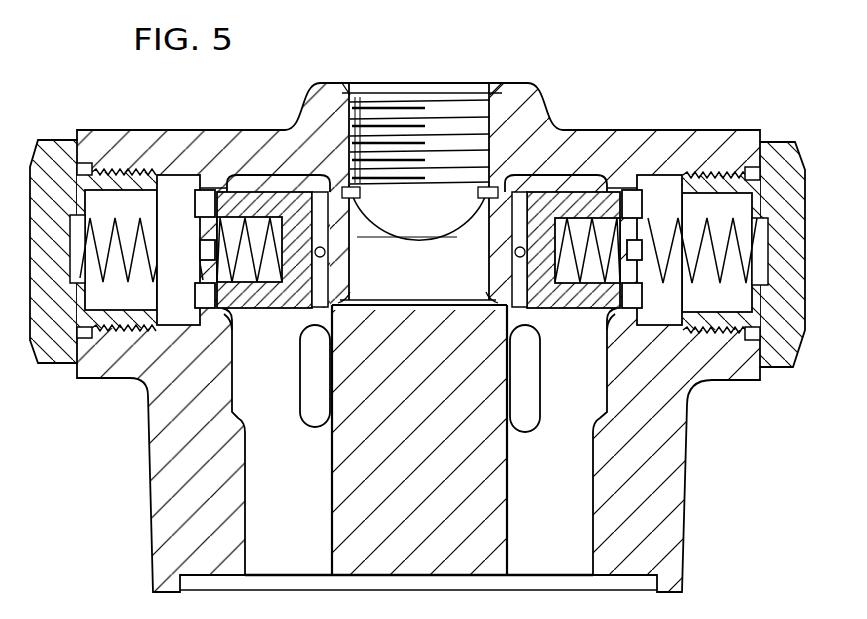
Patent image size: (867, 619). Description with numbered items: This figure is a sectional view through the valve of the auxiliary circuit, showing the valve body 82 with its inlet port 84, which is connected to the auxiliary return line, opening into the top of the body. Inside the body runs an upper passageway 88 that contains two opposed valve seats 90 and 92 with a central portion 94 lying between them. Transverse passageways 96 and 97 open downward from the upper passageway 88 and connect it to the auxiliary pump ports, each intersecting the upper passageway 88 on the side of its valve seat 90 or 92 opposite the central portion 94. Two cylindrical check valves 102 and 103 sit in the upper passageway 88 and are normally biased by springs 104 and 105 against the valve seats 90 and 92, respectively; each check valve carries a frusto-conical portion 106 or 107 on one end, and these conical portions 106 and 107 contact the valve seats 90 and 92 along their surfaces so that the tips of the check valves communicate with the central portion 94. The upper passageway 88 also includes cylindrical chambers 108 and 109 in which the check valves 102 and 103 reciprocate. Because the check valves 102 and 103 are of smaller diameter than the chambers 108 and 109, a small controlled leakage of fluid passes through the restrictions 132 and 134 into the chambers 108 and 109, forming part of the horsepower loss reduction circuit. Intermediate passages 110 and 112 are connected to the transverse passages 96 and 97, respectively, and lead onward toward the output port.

The valve body 82 is at (150, 480).
The inlet port 84 is at (480, 95).
The upper passageway 88 is at (560, 178).
The valve seat 90 is at (480, 193).
The valve seat 92 is at (358, 193).
The central portion 94 is at (423, 197).
The transverse passageway 96 is at (597, 413).
The transverse passageway 97 is at (240, 396).
The check valve 102 is at (610, 187).
The check valve 103 is at (257, 180).
The spring 104 is at (733, 220).
The spring 105 is at (118, 212).
The frusto-conical portion 106 is at (488, 300).
The frusto-conical portion 107 is at (357, 298).
The cylindrical chamber 108 is at (670, 192).
The cylindrical chamber 109 is at (175, 190).
The intermediate passage 110 is at (533, 413).
The intermediate passage 112 is at (308, 413).
The restriction 132 is at (604, 322).
The restriction 134 is at (232, 324).